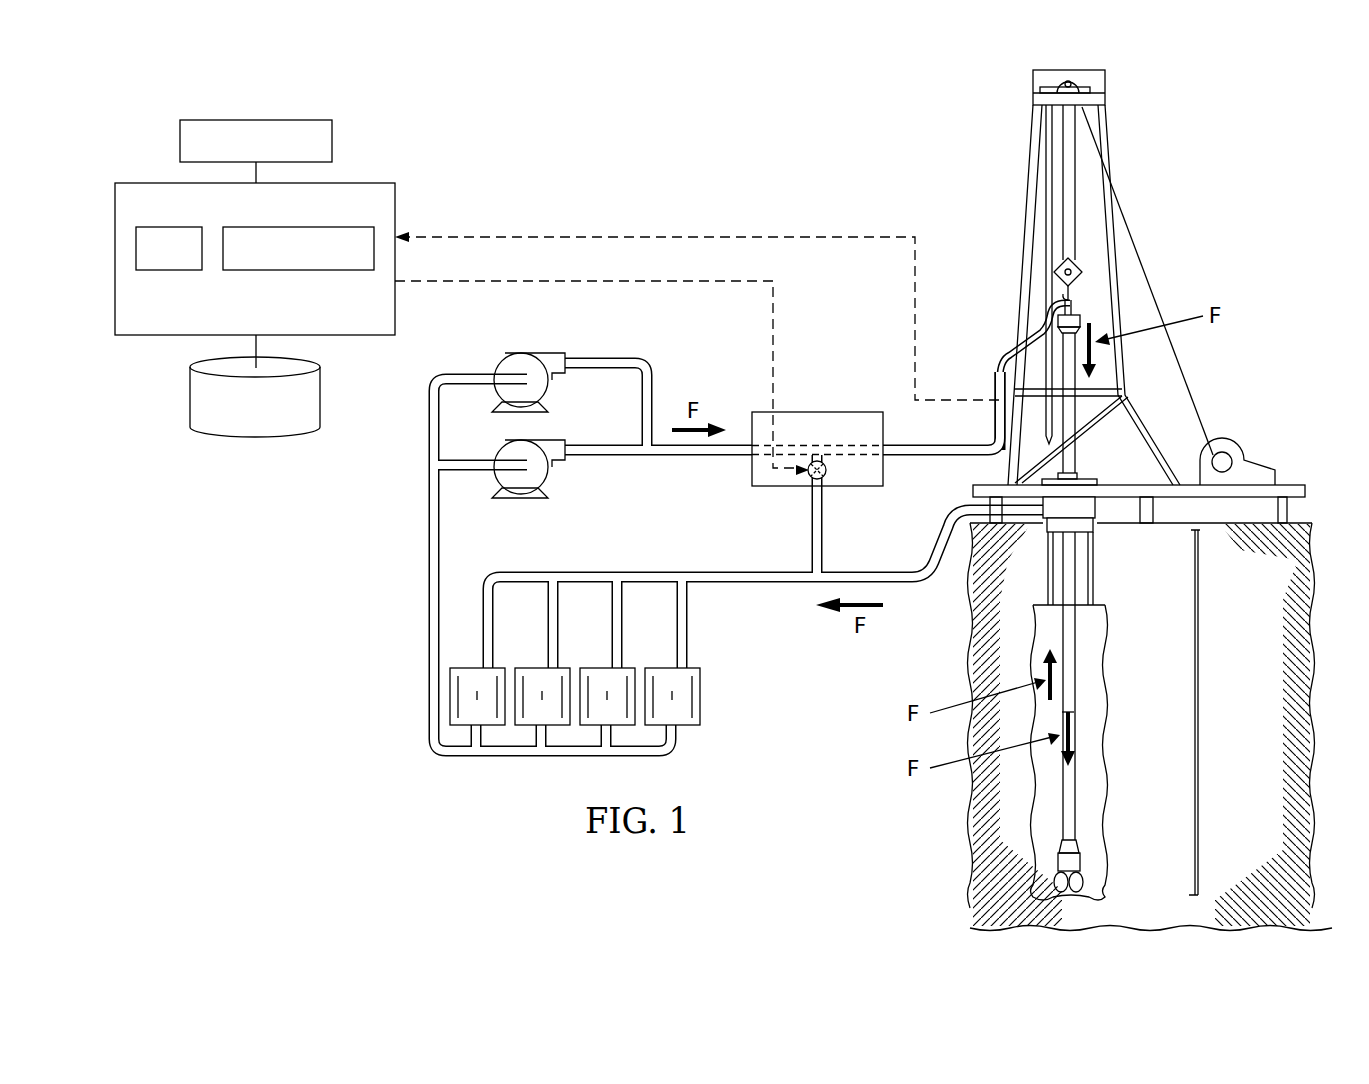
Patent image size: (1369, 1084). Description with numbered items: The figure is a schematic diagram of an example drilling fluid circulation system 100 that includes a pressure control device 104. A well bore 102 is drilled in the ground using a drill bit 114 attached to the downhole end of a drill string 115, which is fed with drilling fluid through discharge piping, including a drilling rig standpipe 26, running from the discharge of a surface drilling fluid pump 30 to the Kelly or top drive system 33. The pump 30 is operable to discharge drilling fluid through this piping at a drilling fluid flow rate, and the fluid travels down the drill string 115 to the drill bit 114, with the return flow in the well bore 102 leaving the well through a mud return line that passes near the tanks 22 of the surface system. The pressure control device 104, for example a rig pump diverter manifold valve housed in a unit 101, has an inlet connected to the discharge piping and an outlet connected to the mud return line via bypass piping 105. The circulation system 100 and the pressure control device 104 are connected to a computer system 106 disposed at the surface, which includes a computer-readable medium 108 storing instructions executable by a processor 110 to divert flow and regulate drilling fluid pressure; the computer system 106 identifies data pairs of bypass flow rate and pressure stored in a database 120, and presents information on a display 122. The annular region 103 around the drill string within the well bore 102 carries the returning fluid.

The drilling fluid circulation system 100 is at (266, 660).
The mud tanks 22 is at (700, 692).
The drilling rig standpipe 26 is at (994, 380).
The surface drilling fluid pump 30 is at (521, 352).
The Kelly or top drive system 33 is at (1080, 458).
The flow control unit 101 is at (837, 412).
The well bore 102 is at (1107, 621).
The annulus 103 is at (1098, 663).
The pressure control device 104 is at (827, 468).
The bypass piping 105 is at (812, 562).
The computer system 106 is at (152, 180).
The computer-readable medium 108 is at (170, 270).
The processor 110 is at (300, 270).
The drill bit 114 is at (1083, 862).
The drill string 115 is at (1209, 704).
The database 120 is at (190, 397).
The display 122 is at (244, 118).